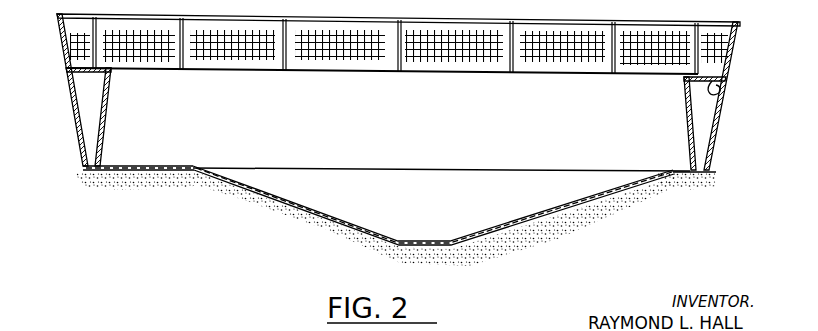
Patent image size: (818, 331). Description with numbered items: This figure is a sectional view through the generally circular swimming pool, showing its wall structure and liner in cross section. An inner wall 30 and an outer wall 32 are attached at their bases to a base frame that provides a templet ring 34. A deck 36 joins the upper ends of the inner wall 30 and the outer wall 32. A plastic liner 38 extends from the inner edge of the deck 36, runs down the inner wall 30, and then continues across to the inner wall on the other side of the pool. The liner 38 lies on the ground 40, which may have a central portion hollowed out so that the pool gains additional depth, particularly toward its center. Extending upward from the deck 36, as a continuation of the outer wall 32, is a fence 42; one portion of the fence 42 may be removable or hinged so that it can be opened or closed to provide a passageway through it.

The inner wall 30 is at (697, 110).
The outer wall 32 is at (720, 110).
The templet ring 34 is at (714, 172).
The deck 36 is at (725, 92).
The plastic liner 38 is at (153, 166).
The ground 40 is at (567, 212).
The fence 42 is at (720, 44).